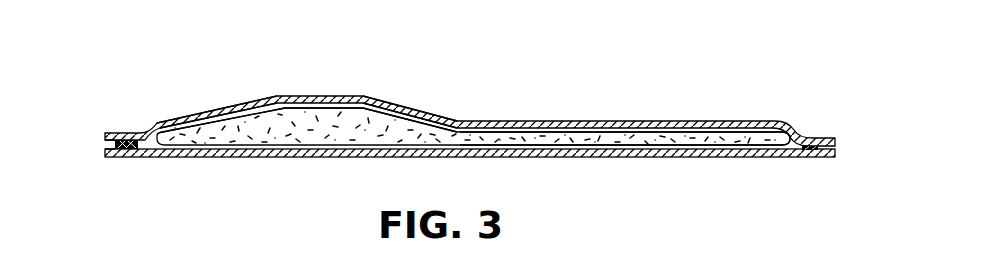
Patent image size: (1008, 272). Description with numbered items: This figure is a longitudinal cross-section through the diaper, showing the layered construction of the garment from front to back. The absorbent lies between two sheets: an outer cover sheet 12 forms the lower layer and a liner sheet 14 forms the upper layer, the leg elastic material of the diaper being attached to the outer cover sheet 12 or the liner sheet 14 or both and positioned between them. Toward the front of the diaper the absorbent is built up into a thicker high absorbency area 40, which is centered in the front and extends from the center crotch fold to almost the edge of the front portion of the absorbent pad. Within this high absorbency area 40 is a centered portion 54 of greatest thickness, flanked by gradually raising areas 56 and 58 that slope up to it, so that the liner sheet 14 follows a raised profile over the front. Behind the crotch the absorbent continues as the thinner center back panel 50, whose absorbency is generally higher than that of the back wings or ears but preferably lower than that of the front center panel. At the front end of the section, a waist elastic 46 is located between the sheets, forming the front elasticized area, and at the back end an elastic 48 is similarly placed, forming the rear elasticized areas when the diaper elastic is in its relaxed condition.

The outer cover sheet 12 is at (572, 160).
The liner sheet 14 is at (560, 122).
The high absorbency area 40 is at (358, 118).
The center back panel 50 is at (668, 138).
The centered portion of greatest thickness 54 is at (310, 108).
The gradually raising area 56 is at (187, 120).
The gradually raising area 58 is at (425, 120).
The waist elastic 46 is at (123, 135).
The elastic 48 is at (813, 137).